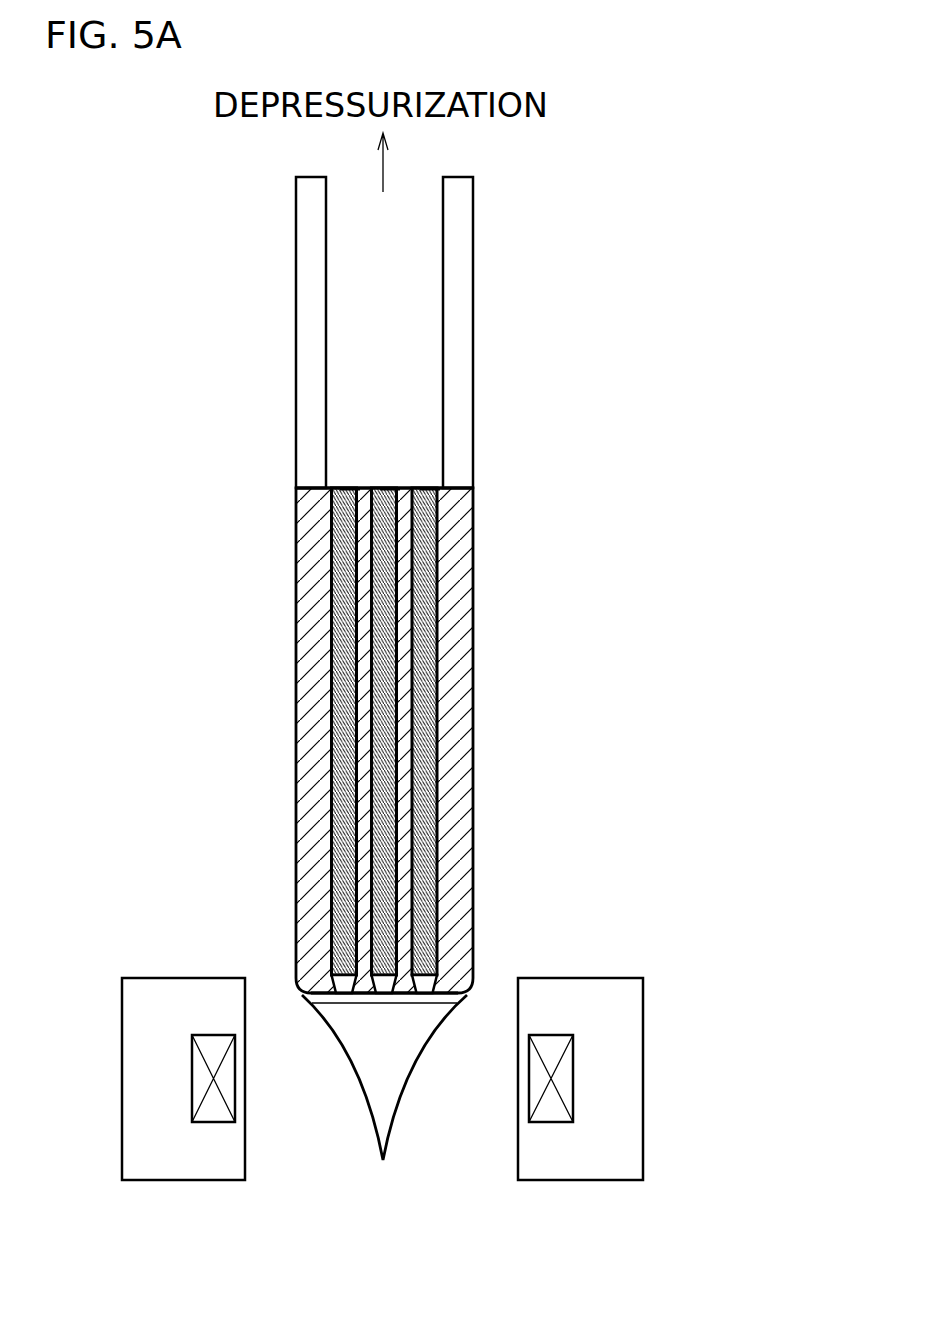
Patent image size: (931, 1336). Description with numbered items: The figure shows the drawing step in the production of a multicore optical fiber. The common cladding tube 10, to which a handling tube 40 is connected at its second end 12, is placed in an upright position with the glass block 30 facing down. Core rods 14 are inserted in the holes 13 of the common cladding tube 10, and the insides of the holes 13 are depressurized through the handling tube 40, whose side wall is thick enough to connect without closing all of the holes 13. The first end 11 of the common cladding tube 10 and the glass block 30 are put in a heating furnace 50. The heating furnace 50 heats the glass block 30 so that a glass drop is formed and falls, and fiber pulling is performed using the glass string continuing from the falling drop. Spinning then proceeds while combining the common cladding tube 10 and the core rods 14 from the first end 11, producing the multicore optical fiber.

The common cladding tube 10 is at (298, 658).
The first end 11 is at (302, 997).
The second end 12 is at (297, 487).
The holes 13 is at (337, 778).
The core rods 14 is at (423, 490).
The glass block 30 is at (405, 1075).
The handling tube 40 is at (304, 314).
The heating furnace 50 is at (182, 978).